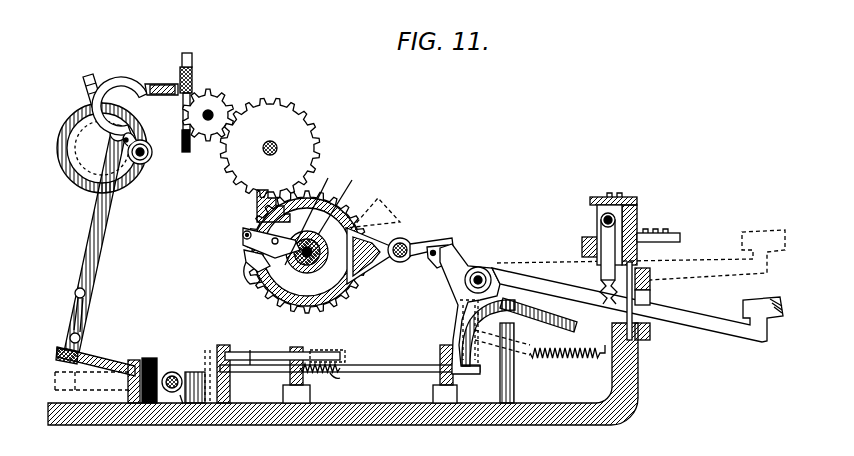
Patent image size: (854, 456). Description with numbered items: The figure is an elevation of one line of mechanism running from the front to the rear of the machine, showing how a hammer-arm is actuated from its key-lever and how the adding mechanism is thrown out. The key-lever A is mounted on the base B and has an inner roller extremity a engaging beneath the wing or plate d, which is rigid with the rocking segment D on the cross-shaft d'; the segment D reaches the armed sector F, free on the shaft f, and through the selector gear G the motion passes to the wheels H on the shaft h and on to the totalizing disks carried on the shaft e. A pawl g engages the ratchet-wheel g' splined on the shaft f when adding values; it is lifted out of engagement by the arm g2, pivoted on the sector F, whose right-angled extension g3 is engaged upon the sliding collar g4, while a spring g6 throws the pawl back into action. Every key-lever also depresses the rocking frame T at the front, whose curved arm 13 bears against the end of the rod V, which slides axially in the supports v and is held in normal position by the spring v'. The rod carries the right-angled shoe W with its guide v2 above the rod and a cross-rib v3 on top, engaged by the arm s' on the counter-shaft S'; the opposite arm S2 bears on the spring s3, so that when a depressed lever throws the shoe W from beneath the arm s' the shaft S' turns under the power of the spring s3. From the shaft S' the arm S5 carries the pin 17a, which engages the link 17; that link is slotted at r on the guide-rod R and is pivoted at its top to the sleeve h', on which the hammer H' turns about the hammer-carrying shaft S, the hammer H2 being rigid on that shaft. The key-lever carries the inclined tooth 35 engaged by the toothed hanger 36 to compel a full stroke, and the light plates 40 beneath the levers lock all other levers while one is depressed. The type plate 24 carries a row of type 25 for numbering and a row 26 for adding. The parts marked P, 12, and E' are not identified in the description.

The key-lever A is at (638, 295).
The base B is at (640, 388).
The serrated bar P is at (680, 237).
The frame bracket 12 is at (662, 232).
The toothed hanger 36 is at (604, 268).
The short plate 40 is at (650, 295).
The tooth 35 is at (600, 308).
The rocking frame T is at (540, 310).
The curved arm 13 is at (500, 375).
The roller extremity a is at (450, 255).
The plate d is at (434, 238).
The cross-shaft d' is at (405, 235).
The rocking segment D is at (372, 255).
The selector-wheel G is at (306, 262).
The pawl g is at (258, 206).
The ratchet-wheel g' is at (305, 285).
The arm g2 is at (244, 252).
The right-angled extension g3 is at (310, 212).
The collar g4 is at (338, 197).
The spring g6 is at (247, 268).
The armed sector F is at (243, 235).
The wheel H is at (283, 147).
The shaft h is at (279, 150).
The pinion E' is at (215, 107).
The shaft e is at (206, 120).
The type plate 24 is at (190, 74).
The row of type 25 is at (180, 92).
The row of type 26 is at (178, 67).
The hammer H' is at (135, 98).
The hammer H2 is at (58, 153).
The sleeve h' is at (146, 141).
The hammer-carrying shaft S is at (147, 163).
The link 17 is at (100, 240).
The slot r is at (95, 300).
The guide-rod R is at (88, 336).
The pin 17a is at (57, 355).
The arm S5 is at (104, 366).
The spring s3 is at (92, 386).
The arm S2 is at (160, 358).
The counter-shaft S' is at (174, 370).
The arm s' is at (195, 380).
The sliding shoe W is at (222, 347).
The guide v2 is at (285, 341).
The shaft f is at (259, 341).
The rod V is at (395, 365).
The support v is at (370, 374).
The spring v' is at (340, 386).
The cross-rib v3 is at (183, 404).